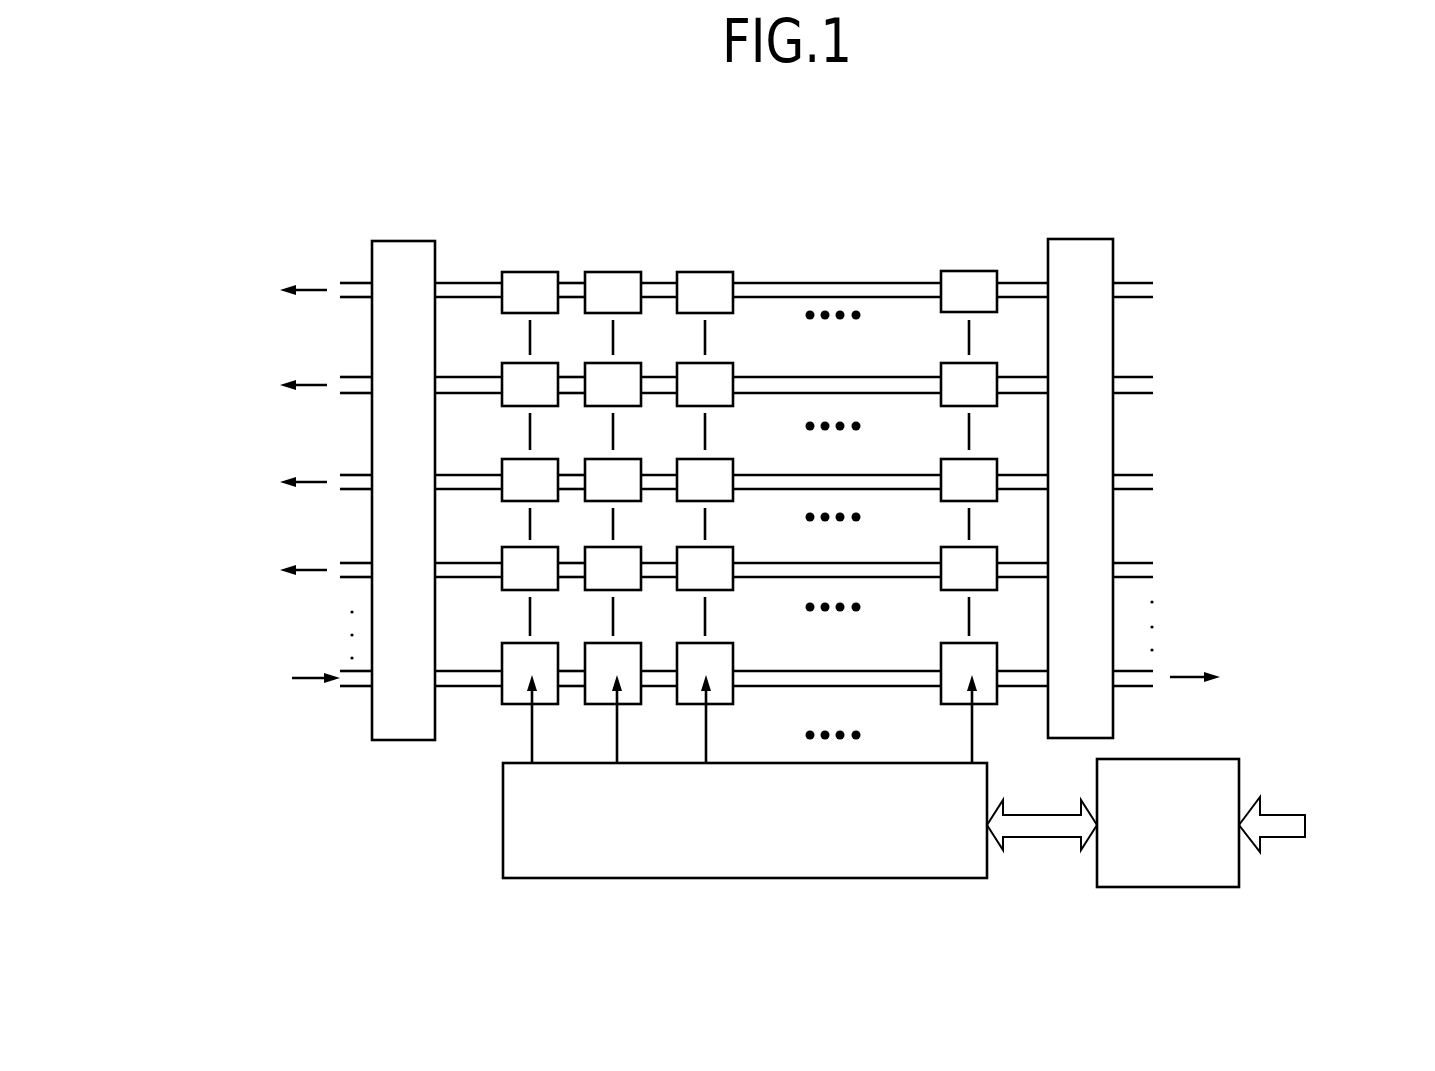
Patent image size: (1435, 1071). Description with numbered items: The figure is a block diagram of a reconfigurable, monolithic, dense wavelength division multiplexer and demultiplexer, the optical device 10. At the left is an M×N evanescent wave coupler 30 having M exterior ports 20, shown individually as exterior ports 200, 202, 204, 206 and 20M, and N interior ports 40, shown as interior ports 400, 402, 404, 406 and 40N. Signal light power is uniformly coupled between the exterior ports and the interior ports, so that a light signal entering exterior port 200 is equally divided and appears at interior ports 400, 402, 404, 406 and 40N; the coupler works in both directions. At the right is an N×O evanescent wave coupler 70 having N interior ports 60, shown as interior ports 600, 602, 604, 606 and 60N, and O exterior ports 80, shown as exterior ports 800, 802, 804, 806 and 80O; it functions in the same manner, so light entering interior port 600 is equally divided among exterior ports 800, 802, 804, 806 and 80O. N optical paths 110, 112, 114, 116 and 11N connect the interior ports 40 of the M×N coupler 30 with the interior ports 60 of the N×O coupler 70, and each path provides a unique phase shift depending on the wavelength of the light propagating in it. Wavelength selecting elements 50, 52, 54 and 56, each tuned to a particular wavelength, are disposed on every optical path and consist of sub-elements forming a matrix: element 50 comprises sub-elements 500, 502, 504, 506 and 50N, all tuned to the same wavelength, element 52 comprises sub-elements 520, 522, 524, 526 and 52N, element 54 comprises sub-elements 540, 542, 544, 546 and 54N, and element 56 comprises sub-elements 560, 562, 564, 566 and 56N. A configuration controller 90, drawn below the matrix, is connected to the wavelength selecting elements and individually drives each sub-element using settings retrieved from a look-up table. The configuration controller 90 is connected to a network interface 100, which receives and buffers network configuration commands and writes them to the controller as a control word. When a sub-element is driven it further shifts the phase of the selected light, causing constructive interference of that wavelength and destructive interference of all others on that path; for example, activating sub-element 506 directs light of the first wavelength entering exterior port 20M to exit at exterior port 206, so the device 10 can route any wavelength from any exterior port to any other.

The optical device 10 is at (1284, 141).
The M exterior ports 20 is at (316, 249).
The exterior port 200 is at (350, 274).
The exterior port 202 is at (350, 370).
The exterior port 204 is at (350, 466).
The exterior port 206 is at (350, 555).
The exterior port 20M is at (348, 694).
The M×N evanescent wave coupler 30 is at (396, 241).
The N interior ports 40 is at (464, 234).
The interior port 400 is at (468, 274).
The interior port 402 is at (468, 370).
The interior port 404 is at (468, 466).
The interior port 406 is at (468, 554).
The interior port 40N is at (468, 654).
The wavelength selecting element 50 is at (528, 243).
The wavelength selecting element 52 is at (607, 243).
The wavelength selecting element 54 is at (702, 243).
The wavelength selecting element 56 is at (962, 243).
The N interior ports 60 is at (1020, 233).
The wavelength selecting sub-element 500 is at (530, 292).
The wavelength selecting sub-element 520 is at (613, 292).
The wavelength selecting sub-element 540 is at (705, 292).
The wavelength selecting sub-element 560 is at (969, 291).
The wavelength selecting sub-element 502 is at (530, 384).
The wavelength selecting sub-element 522 is at (613, 384).
The wavelength selecting sub-element 542 is at (705, 384).
The wavelength selecting sub-element 562 is at (969, 384).
The wavelength selecting sub-element 504 is at (530, 480).
The wavelength selecting sub-element 524 is at (613, 480).
The wavelength selecting sub-element 544 is at (705, 480).
The wavelength selecting sub-element 564 is at (969, 480).
The wavelength selecting sub-element 506 is at (530, 568).
The wavelength selecting sub-element 526 is at (613, 568).
The wavelength selecting sub-element 546 is at (705, 568).
The wavelength selecting sub-element 566 is at (969, 568).
The wavelength selecting sub-element 50N is at (530, 673).
The wavelength selecting sub-element 52N is at (613, 673).
The wavelength selecting sub-element 54N is at (705, 673).
The wavelength selecting sub-element 56N is at (969, 673).
The optical path 110 is at (837, 271).
The optical path 112 is at (837, 370).
The optical path 114 is at (837, 463).
The optical path 116 is at (837, 553).
The optical path 11N is at (837, 660).
The interior port 600 is at (1022, 272).
The interior port 602 is at (1022, 370).
The interior port 604 is at (1022, 463).
The interior port 606 is at (1022, 553).
The interior port 60N is at (1022, 661).
The N×O evanescent wave coupler 70 is at (1077, 239).
The O exterior ports 80 is at (1204, 465).
The exterior port 800 is at (1142, 272).
The exterior port 802 is at (1142, 370).
The exterior port 804 is at (1142, 463).
The exterior port 806 is at (1142, 553).
The exterior port 80O is at (1145, 696).
The configuration controller 90 is at (800, 776).
The network interface 100 is at (1266, 823).